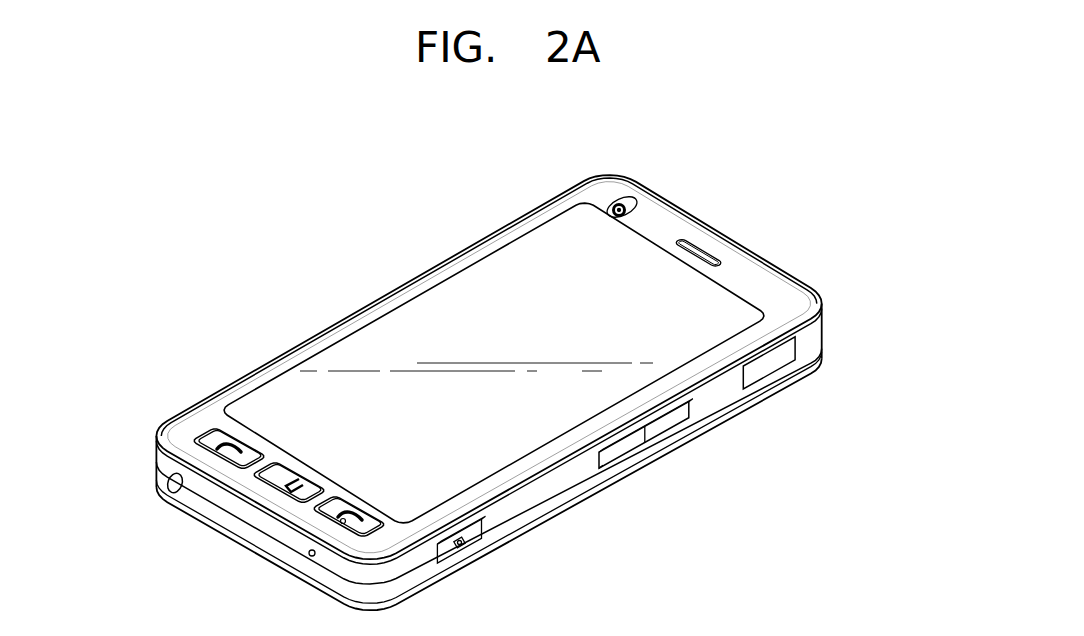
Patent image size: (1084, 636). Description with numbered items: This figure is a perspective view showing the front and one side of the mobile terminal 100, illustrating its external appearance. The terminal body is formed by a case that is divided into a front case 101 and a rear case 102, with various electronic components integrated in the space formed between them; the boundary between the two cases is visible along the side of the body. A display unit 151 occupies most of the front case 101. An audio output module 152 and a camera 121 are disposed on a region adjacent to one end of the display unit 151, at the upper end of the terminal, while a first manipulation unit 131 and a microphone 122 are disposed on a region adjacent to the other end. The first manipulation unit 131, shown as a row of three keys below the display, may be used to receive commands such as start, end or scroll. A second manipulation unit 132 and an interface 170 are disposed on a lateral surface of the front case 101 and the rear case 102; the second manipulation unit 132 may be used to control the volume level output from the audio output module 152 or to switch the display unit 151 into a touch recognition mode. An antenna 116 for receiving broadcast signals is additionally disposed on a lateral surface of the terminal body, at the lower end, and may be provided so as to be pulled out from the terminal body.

The mobile terminal 100 is at (435, 224).
The front case 101 is at (815, 329).
The rear case 102 is at (818, 349).
The antenna 116 is at (172, 488).
The camera 121 is at (626, 206).
The microphone 122 is at (309, 556).
The first manipulation unit 131 is at (206, 436).
The second manipulation unit 132 is at (630, 456).
The display unit 151 is at (417, 298).
The audio output module 152 is at (700, 248).
The interface 170 is at (770, 372).